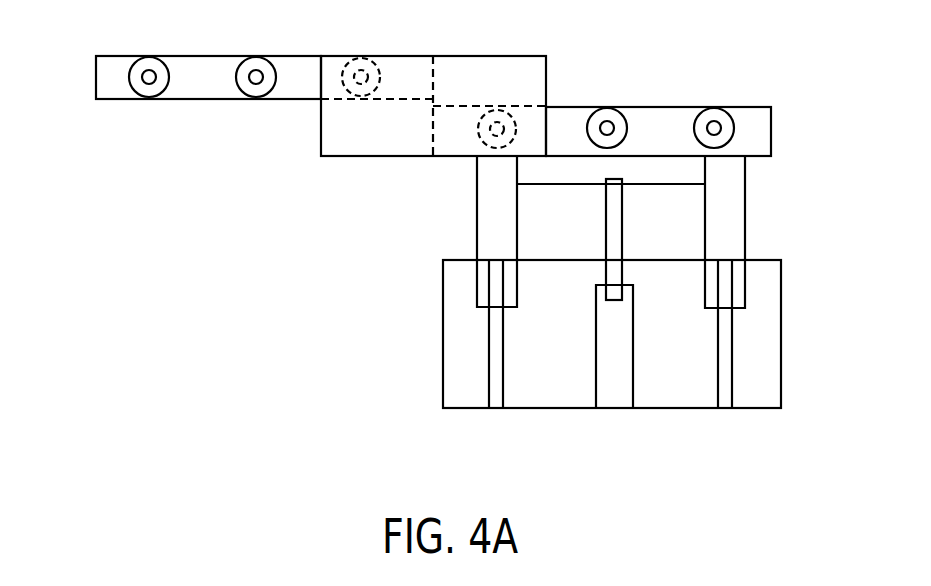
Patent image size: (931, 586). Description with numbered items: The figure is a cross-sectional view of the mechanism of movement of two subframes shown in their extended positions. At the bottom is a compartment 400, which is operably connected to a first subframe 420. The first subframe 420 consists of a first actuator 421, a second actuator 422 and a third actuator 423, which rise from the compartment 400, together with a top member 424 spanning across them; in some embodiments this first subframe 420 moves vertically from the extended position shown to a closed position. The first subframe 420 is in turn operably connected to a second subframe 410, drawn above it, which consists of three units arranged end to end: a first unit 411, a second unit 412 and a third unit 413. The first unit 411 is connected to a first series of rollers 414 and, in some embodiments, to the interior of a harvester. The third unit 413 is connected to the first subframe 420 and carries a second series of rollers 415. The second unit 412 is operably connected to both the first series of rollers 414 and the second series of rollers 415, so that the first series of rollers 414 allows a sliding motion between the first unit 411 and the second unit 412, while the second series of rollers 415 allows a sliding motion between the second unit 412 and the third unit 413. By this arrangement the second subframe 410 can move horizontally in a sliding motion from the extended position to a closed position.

The compartment 400 is at (442, 335).
The second subframe 410 is at (797, 32).
The first unit 411 is at (108, 79).
The second unit 412 is at (513, 70).
The third unit 413 is at (662, 122).
The first series of rollers 414 is at (348, 87).
The second series of rollers 415 is at (517, 123).
The first subframe 420 is at (797, 162).
The first actuator 421 is at (495, 398).
The second actuator 422 is at (615, 398).
The third actuator 423 is at (723, 398).
The top member 424 is at (672, 175).